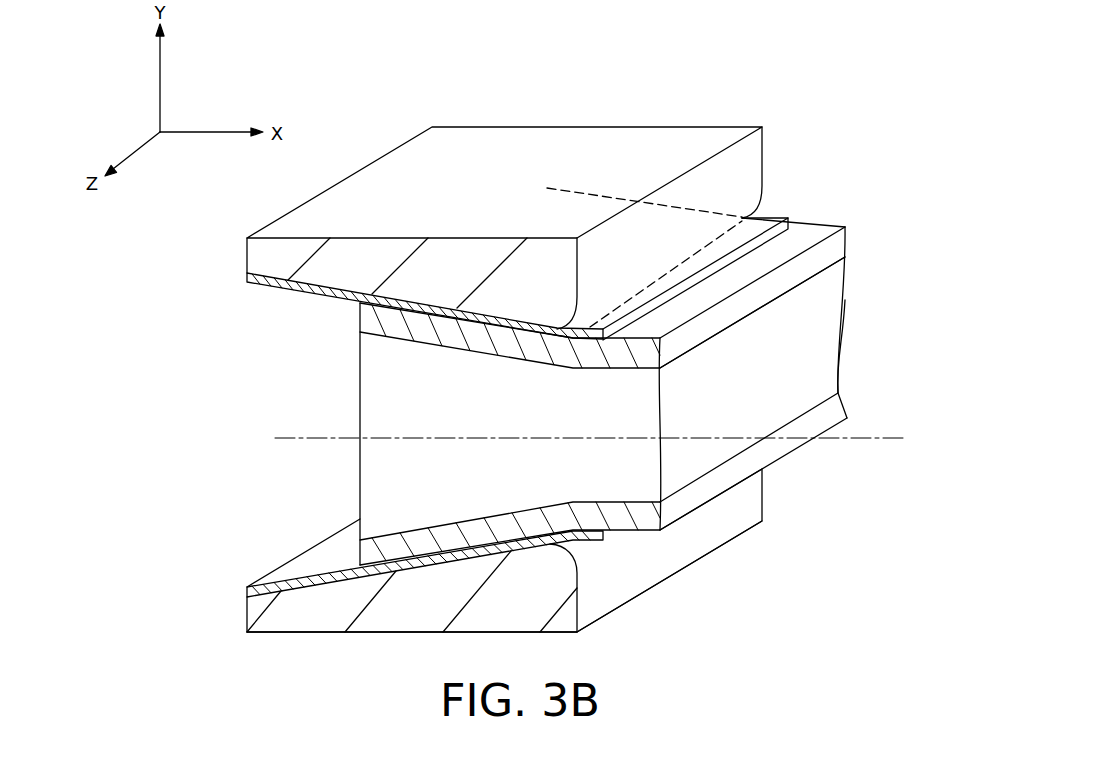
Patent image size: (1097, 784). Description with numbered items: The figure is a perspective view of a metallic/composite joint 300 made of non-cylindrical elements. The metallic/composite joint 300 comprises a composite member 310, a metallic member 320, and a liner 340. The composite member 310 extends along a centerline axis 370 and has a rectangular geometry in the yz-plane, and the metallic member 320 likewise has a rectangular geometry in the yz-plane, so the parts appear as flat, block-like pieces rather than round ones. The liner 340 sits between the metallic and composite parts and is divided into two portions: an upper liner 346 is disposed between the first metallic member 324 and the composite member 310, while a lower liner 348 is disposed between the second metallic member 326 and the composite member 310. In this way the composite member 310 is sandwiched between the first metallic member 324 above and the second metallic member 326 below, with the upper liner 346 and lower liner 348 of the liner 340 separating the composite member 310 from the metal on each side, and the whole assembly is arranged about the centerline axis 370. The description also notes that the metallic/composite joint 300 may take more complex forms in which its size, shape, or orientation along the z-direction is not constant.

The metallic/composite joint 300 is at (776, 75).
The composite member 310 is at (808, 240).
The metallic member 320 is at (315, 203).
The first metallic member 324 is at (395, 158).
The second metallic member 326 is at (400, 634).
The liner 340 is at (257, 288).
The upper liner 346 is at (335, 300).
The lower liner 348 is at (342, 560).
The centerline axis 370 is at (846, 440).